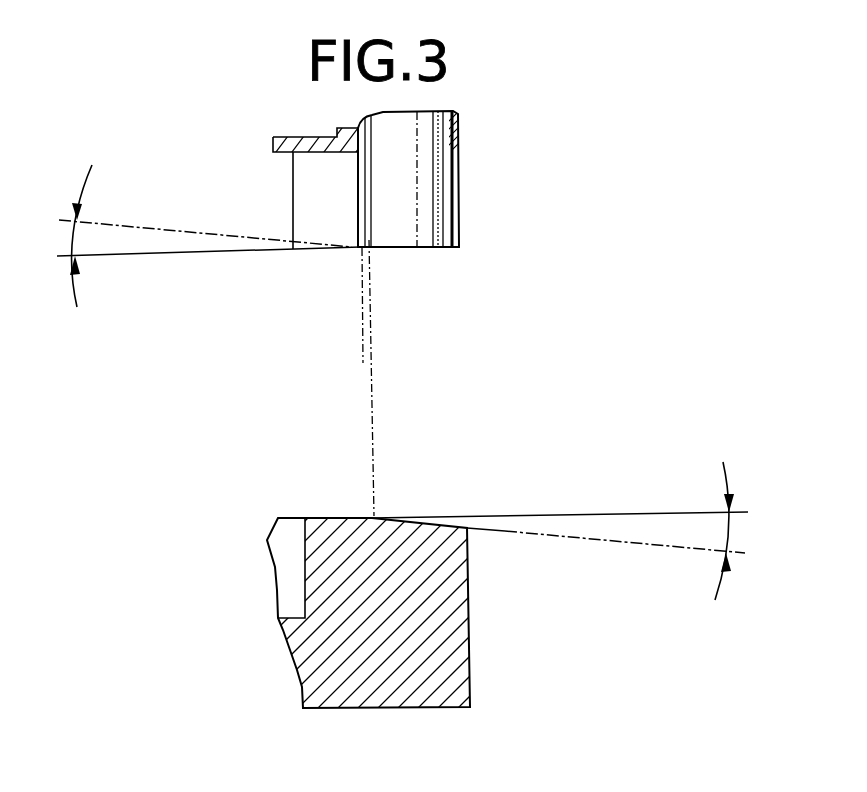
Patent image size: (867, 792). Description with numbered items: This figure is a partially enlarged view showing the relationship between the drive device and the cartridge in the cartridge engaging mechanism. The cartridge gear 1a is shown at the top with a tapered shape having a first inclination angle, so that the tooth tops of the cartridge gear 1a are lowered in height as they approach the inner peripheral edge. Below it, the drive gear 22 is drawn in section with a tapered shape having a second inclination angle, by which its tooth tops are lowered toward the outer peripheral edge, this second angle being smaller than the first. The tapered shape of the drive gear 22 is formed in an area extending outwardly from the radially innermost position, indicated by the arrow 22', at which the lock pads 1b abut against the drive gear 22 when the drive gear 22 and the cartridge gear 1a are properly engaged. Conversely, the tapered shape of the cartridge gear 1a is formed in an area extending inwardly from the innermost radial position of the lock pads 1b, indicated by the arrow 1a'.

The cartridge gear 1a is at (307, 184).
The lock pads 1b is at (410, 210).
The drive gear 22 is at (361, 549).
The arrow indicating innermost position of the lock pads 1a' is at (273, 307).
The arrow indicating radially-innermost position of the drive gear 22' is at (460, 378).